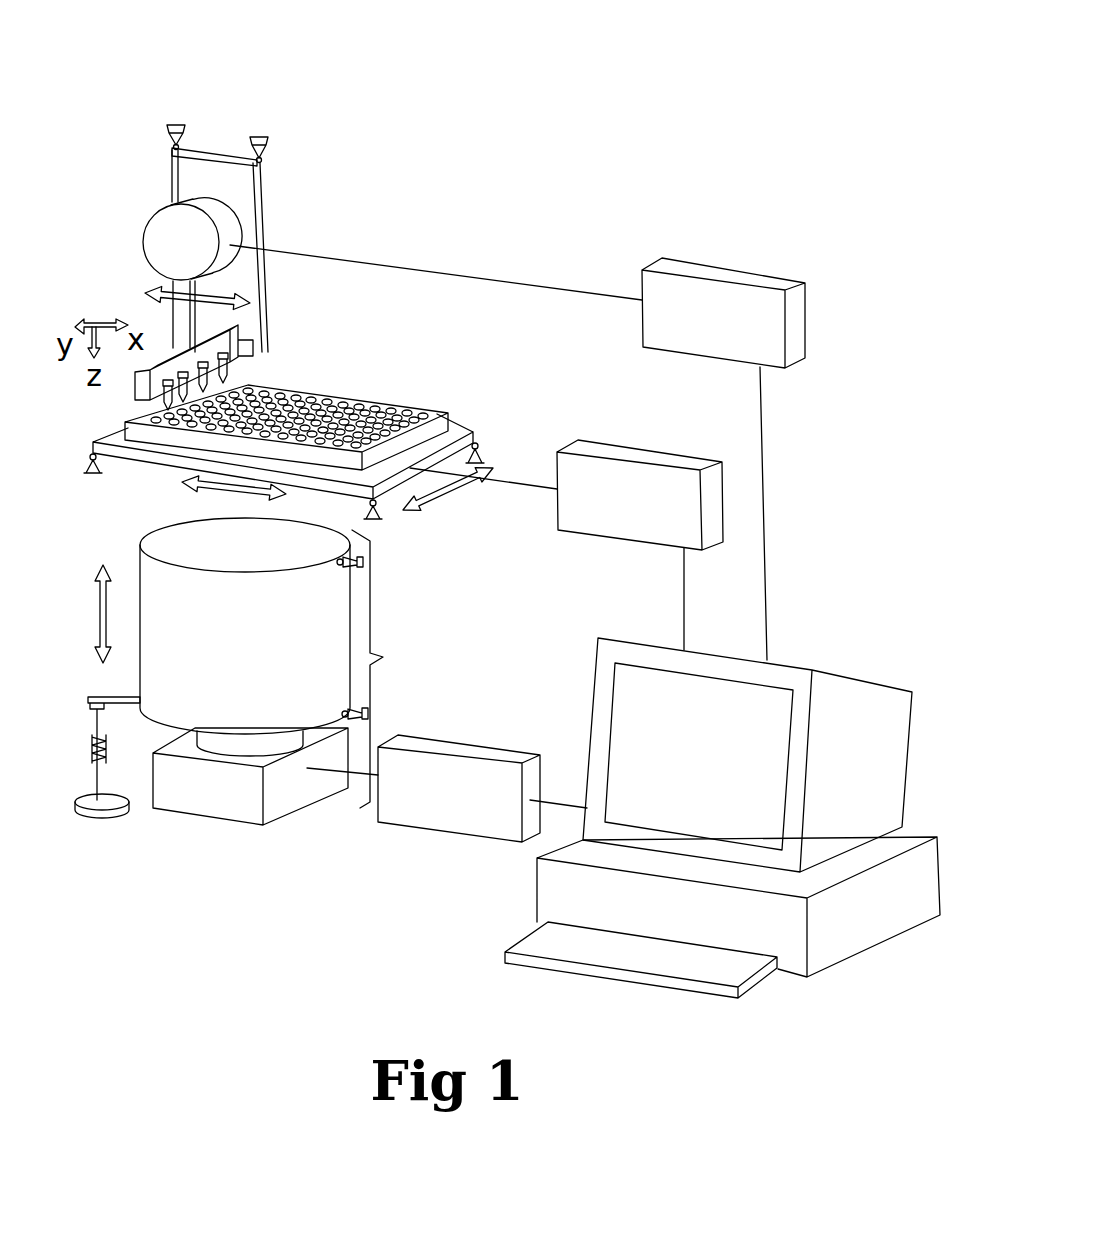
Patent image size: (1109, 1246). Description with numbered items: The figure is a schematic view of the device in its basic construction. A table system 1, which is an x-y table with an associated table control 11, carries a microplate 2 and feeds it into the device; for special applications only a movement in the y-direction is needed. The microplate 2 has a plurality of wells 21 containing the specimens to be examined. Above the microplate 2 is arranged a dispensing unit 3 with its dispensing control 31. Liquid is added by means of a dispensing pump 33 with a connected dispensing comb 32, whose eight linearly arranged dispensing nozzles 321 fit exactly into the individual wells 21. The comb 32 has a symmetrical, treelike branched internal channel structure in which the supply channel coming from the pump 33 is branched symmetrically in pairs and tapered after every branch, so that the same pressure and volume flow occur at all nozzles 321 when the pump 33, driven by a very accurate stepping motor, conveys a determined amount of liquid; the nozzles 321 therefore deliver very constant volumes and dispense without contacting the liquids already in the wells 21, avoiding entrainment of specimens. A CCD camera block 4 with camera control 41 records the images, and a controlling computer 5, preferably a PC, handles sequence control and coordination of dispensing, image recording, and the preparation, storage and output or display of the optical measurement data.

The table system 1 is at (455, 430).
The microplate 2 is at (427, 415).
The wells 21 is at (412, 413).
The dispensing unit 3 is at (232, 157).
The dispensing control 31 is at (730, 277).
The dispensing comb 32 is at (162, 352).
The dispensing nozzles 321 is at (233, 373).
The dispensing pump 33 is at (170, 228).
The table control 11 is at (713, 512).
The CCD camera block 4 is at (383, 656).
The camera control 41 is at (457, 748).
The controlling computer 5 is at (557, 894).